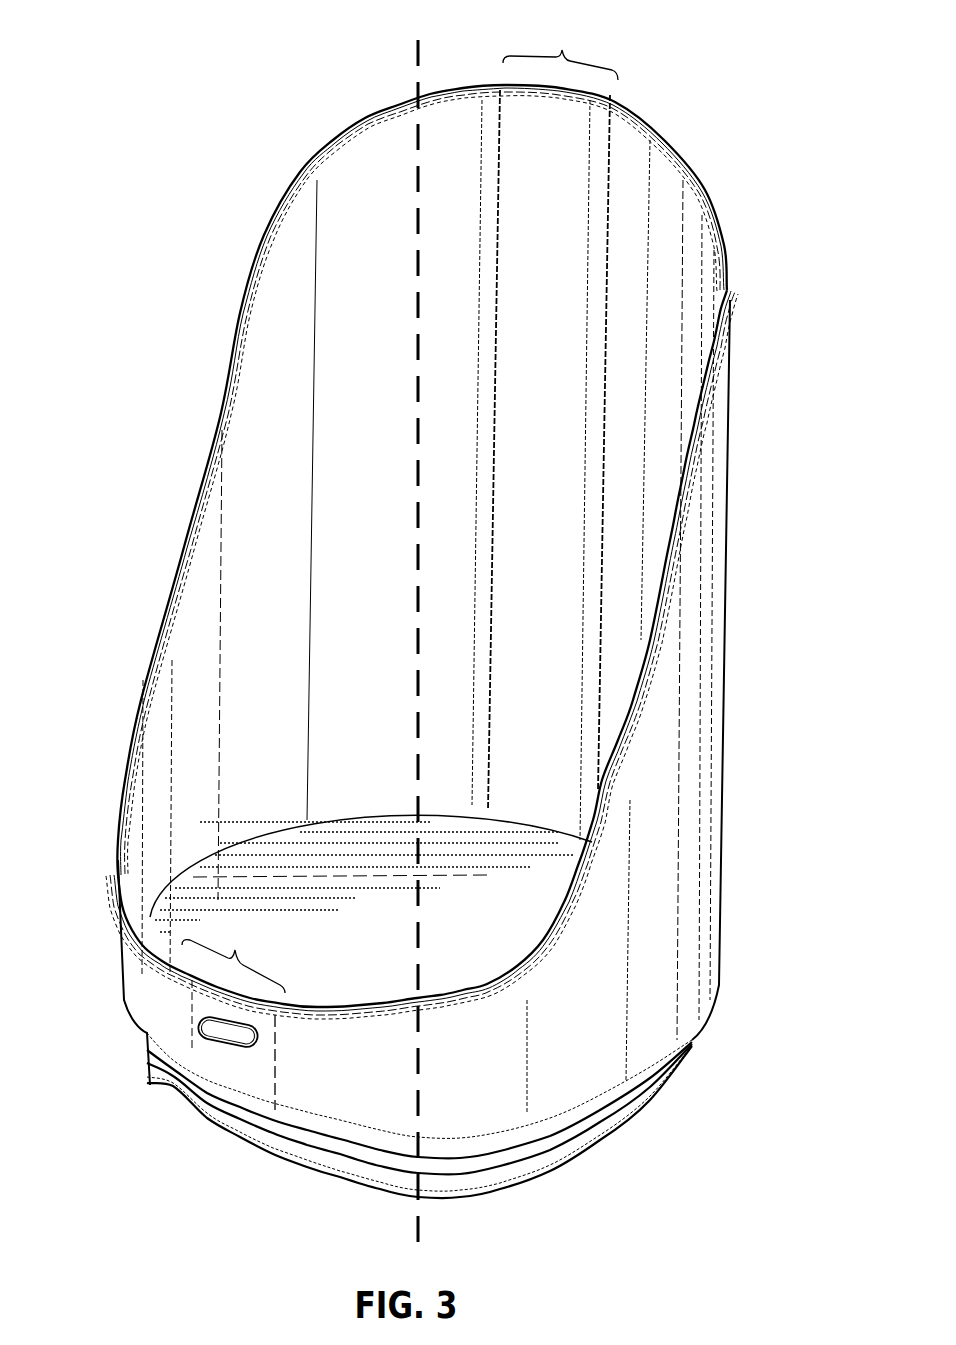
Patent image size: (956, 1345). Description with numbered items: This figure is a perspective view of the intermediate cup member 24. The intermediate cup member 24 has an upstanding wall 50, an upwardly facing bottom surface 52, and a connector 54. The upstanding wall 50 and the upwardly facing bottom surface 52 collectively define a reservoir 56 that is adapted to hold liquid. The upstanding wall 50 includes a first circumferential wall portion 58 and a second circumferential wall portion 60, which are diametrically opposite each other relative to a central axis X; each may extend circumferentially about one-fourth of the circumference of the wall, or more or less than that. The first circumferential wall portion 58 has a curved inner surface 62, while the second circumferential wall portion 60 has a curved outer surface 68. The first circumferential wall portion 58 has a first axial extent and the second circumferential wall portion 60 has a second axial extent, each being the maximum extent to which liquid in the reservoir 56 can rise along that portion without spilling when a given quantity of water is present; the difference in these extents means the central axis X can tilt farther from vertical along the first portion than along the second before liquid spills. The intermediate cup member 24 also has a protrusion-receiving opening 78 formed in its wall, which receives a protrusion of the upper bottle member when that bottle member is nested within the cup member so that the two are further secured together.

The intermediate cup member 24 is at (448, 613).
The upstanding wall 50 is at (676, 884).
The upwardly facing bottom surface 52 is at (500, 899).
The connector 54 is at (600, 1139).
The reservoir 56 is at (240, 906).
The first circumferential wall portion 58 is at (560, 51).
The second circumferential wall portion 60 is at (233, 962).
The inner surface 62 is at (565, 238).
The outer surface 68 is at (187, 1057).
The protrusion-receiving opening 78 is at (222, 1025).
The central axis X is at (417, 631).